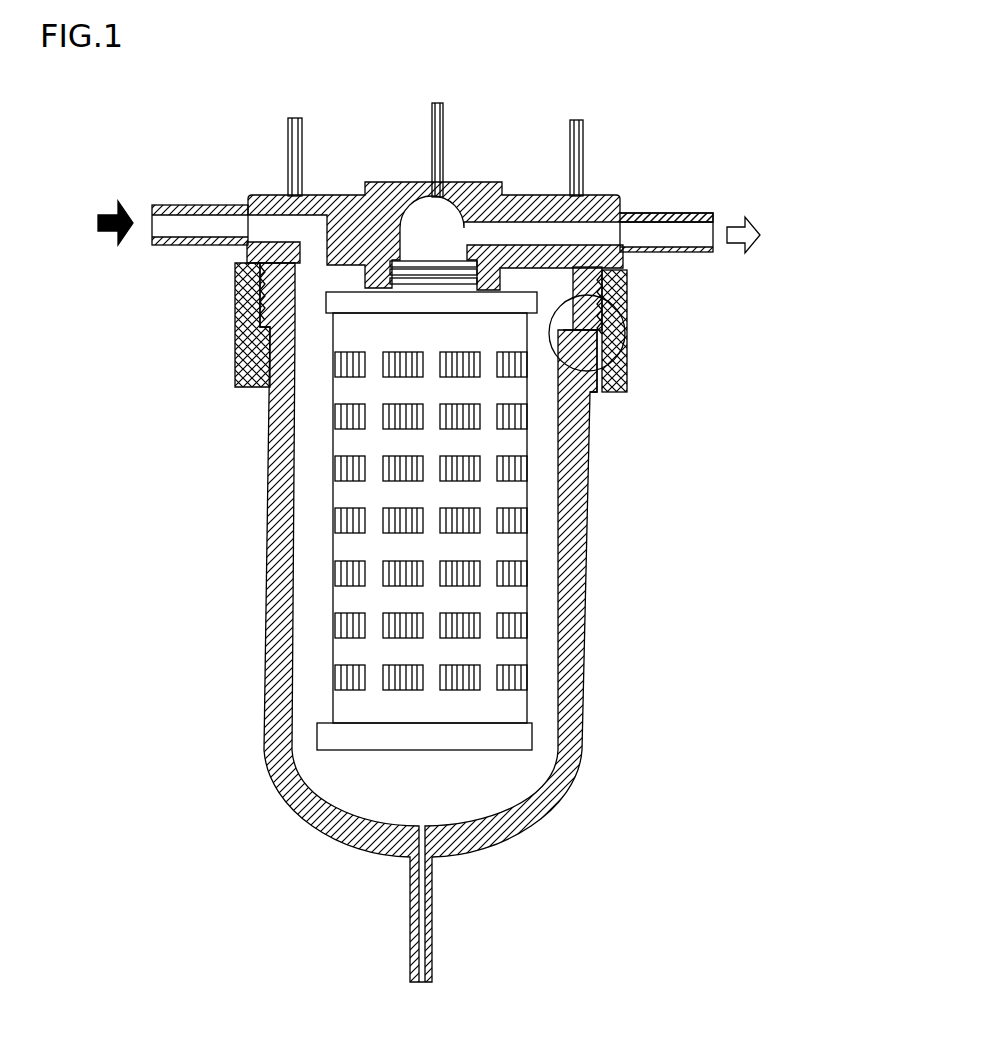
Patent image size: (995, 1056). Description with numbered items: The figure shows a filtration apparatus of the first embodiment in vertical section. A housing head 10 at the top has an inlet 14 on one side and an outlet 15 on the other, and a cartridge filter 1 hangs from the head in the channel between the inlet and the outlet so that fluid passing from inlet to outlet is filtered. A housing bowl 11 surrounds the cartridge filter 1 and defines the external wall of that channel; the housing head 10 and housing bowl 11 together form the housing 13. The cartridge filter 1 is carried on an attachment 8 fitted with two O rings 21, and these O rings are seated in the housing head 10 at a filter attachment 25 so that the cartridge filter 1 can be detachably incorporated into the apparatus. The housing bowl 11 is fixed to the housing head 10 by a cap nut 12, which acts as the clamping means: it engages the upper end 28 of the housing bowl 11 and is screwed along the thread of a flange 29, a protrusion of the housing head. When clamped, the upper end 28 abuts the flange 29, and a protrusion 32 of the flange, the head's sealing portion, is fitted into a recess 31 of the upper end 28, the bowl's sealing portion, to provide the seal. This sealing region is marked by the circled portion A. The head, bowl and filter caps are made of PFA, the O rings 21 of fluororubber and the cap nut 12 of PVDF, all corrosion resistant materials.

The cartridge filter 1 is at (513, 550).
The attachment 8 is at (411, 270).
The housing head 10 is at (507, 156).
The housing bowl 11 is at (285, 578).
The cap nut 12 is at (237, 372).
The housing 13 is at (88, 188).
The inlet 14 is at (148, 222).
The outlet 15 is at (715, 226).
The O rings 21 is at (425, 277).
The filter attachment 25 is at (450, 263).
The upper end 28 is at (591, 421).
The flange 29 is at (579, 292).
The recess 31 is at (627, 363).
The protrusion 32 is at (610, 303).
The enlarged portion A is at (627, 327).